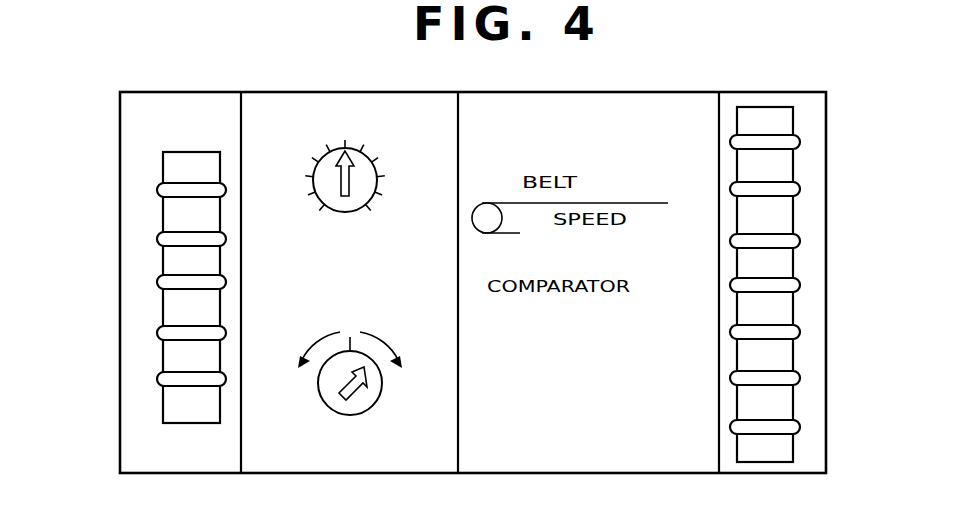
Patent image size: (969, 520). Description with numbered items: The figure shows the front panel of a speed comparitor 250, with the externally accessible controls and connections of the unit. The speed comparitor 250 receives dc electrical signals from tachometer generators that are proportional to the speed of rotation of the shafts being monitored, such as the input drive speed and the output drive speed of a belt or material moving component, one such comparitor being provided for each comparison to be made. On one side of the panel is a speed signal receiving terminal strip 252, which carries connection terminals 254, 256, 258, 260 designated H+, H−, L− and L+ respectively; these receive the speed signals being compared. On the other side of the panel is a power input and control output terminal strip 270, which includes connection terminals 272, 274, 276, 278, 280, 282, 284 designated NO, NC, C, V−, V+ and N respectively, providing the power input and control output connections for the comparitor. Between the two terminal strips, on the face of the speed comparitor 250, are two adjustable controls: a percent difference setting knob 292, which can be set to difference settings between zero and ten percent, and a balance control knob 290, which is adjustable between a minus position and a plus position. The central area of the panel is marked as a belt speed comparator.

The speed comparitor 250 is at (607, 78).
The speed signal receiving terminal strip 252 is at (133, 322).
The connection terminal 254 is at (158, 190).
The connection terminal 256 is at (158, 239).
The connection terminal 258 is at (158, 282).
The connection terminal 260 is at (158, 333).
The power input and control output terminal strip 270 is at (810, 241).
The connection terminal 272 is at (800, 142).
The connection terminal 274 is at (800, 190).
The connection terminal 276 is at (800, 242).
The connection terminal 278 is at (800, 286).
The connection terminal 280 is at (800, 333).
The connection terminal 282 is at (800, 379).
The connection terminal 284 is at (800, 428).
The balance control knob 290 is at (312, 400).
The percent difference setting knob 292 is at (360, 130).